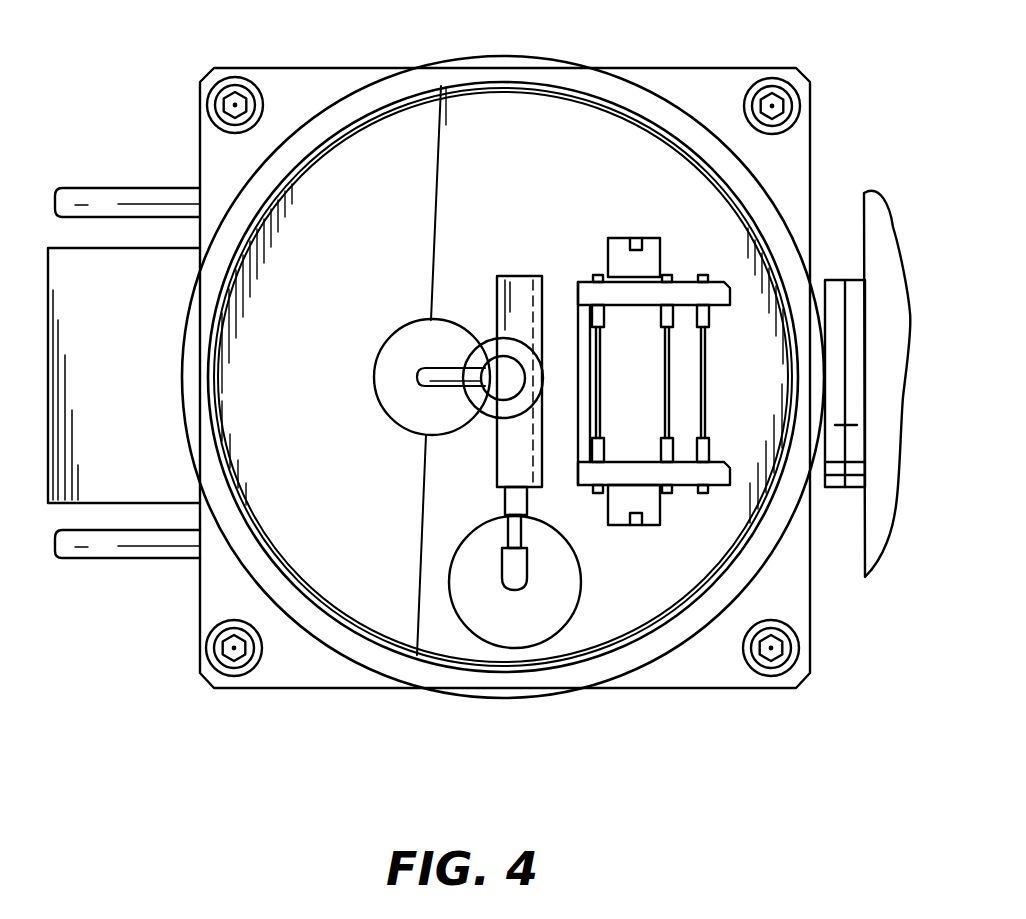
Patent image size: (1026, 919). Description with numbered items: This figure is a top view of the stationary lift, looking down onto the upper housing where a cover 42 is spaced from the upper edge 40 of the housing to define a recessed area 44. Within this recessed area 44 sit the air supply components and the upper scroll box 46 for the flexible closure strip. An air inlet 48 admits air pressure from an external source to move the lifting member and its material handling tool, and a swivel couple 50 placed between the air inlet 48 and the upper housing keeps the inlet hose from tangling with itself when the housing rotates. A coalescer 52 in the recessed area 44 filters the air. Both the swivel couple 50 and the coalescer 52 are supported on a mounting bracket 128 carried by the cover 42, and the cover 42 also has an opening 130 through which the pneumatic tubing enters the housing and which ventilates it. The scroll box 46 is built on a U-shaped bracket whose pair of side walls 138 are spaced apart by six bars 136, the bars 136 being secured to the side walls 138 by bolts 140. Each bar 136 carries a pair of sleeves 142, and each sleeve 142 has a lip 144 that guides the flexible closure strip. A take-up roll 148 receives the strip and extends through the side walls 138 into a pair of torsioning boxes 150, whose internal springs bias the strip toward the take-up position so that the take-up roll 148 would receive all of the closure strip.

The upper edge 40 is at (343, 627).
The cover 42 is at (374, 513).
The recessed area 44 is at (318, 577).
The upper scroll box 46 is at (603, 312).
The air inlet 48 is at (488, 378).
The swivel couple 50 is at (483, 350).
The coalescer 52 is at (530, 625).
The mounting bracket 128 is at (527, 285).
The opening 130 is at (385, 365).
The bars 136 is at (713, 423).
The side walls 138 is at (680, 490).
The bolts 140 is at (677, 462).
The sleeves 142 is at (640, 298).
The lip 144 is at (688, 480).
The take-up roll 148 is at (618, 500).
The torsioning boxes 150 is at (617, 243).